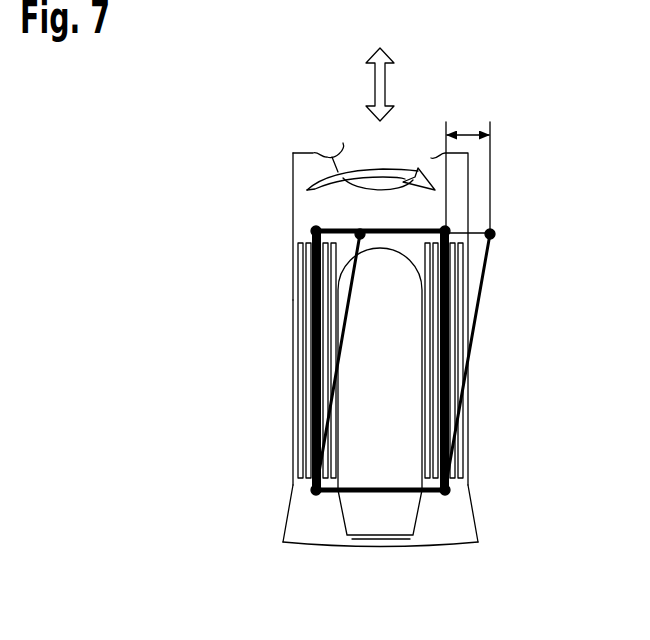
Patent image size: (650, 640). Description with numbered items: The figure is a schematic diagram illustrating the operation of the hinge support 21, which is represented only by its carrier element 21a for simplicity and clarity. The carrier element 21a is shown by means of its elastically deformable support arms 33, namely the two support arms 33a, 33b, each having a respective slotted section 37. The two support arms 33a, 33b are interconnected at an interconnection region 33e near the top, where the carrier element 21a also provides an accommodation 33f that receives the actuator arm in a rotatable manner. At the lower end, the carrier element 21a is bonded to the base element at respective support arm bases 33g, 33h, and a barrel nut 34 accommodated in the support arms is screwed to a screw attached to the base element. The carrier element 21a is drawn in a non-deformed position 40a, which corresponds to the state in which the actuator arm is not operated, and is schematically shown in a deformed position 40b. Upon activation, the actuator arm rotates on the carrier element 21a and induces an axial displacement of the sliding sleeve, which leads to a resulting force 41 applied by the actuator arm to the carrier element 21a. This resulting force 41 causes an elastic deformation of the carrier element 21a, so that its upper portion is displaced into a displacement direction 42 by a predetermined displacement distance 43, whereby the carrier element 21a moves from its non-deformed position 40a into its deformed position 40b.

The hinge support 21 is at (185, 132).
The carrier element 21a is at (265, 395).
The elastically deformable support arms 33 is at (278, 313).
The elastically deformable support arm 33a is at (293, 427).
The elastically deformable support arm 33b is at (468, 403).
The interconnection region 33e is at (288, 190).
The accommodation 33f is at (343, 143).
The support arm base 33g is at (485, 530).
The support arm base 33h is at (277, 530).
The barrel nut 34 is at (382, 544).
The slotted sections 37 is at (293, 437).
The non-deformed position 40a is at (313, 280).
The deformed position 40b is at (485, 267).
The resulting force 41 is at (377, 83).
The displacement direction 42 is at (393, 169).
The displacement distance 43 is at (465, 122).